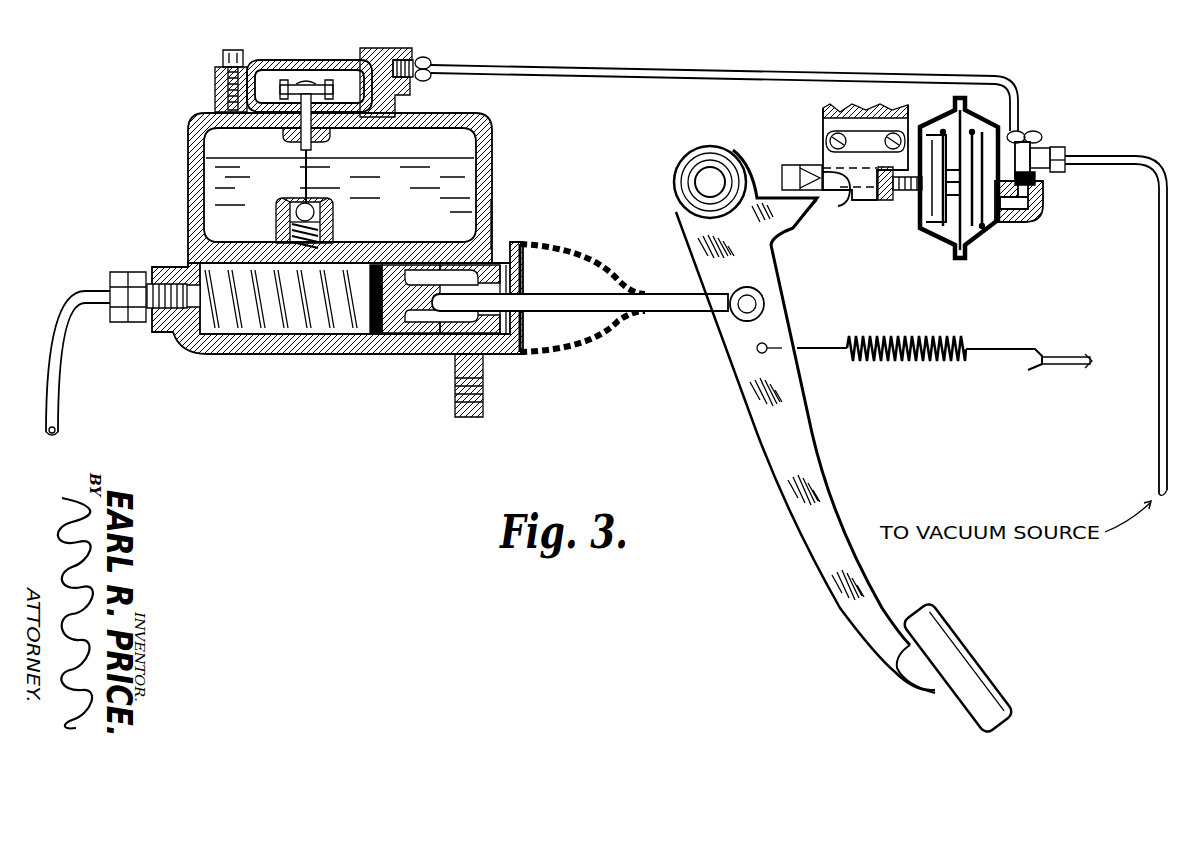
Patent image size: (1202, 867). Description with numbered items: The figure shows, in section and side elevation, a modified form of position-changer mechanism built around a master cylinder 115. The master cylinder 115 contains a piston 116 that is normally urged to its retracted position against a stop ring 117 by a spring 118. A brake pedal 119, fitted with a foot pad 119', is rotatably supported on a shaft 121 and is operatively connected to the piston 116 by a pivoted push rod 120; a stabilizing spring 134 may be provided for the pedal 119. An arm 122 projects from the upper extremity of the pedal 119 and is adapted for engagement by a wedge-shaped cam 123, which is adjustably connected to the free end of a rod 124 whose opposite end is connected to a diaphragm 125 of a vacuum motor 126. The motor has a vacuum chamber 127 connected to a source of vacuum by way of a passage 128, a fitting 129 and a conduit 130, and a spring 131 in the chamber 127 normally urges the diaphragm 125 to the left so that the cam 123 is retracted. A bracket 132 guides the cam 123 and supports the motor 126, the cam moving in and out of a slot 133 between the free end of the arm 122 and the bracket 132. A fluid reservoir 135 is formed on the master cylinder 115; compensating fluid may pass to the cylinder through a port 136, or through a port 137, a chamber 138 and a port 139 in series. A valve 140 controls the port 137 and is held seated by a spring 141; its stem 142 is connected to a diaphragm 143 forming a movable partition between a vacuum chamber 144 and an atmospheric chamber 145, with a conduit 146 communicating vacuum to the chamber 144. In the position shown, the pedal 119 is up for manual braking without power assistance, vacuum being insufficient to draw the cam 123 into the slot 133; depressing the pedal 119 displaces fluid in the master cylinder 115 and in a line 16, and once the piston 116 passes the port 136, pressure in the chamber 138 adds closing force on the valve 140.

The line 16 is at (55, 390).
The master cylinder 115 is at (332, 347).
The piston 116 is at (393, 335).
The stop ring 117 is at (523, 337).
The spring 118 is at (238, 328).
The brake pedal 119 is at (811, 421).
The foot pad 119' is at (992, 665).
The push rod 120 is at (700, 307).
The shaft 121 is at (707, 178).
The arm 122 is at (790, 226).
The wedge-shaped cam 123 is at (800, 165).
The rod 124 is at (906, 192).
The diaphragm 125 is at (977, 240).
The vacuum motor 126 is at (937, 240).
The vacuum chamber 127 is at (973, 122).
The passage 128 is at (1036, 220).
The fitting 129 is at (1042, 143).
The conduit 130 is at (1110, 158).
The spring 131 is at (1000, 222).
The bracket 132 is at (835, 119).
The slot 133 is at (840, 205).
The stabilizing spring 134 is at (912, 362).
The fluid reservoir 135 is at (498, 222).
The port 136 is at (383, 262).
The port 137 is at (310, 195).
The chamber 138 is at (330, 215).
The port 139 is at (335, 238).
The valve 140 is at (283, 214).
The spring 141 is at (282, 233).
The stem 142 is at (302, 180).
The diaphragm 143 is at (262, 100).
The vacuum chamber 144 is at (205, 126).
The atmospheric chamber 145 is at (310, 88).
The conduit 146 is at (663, 72).